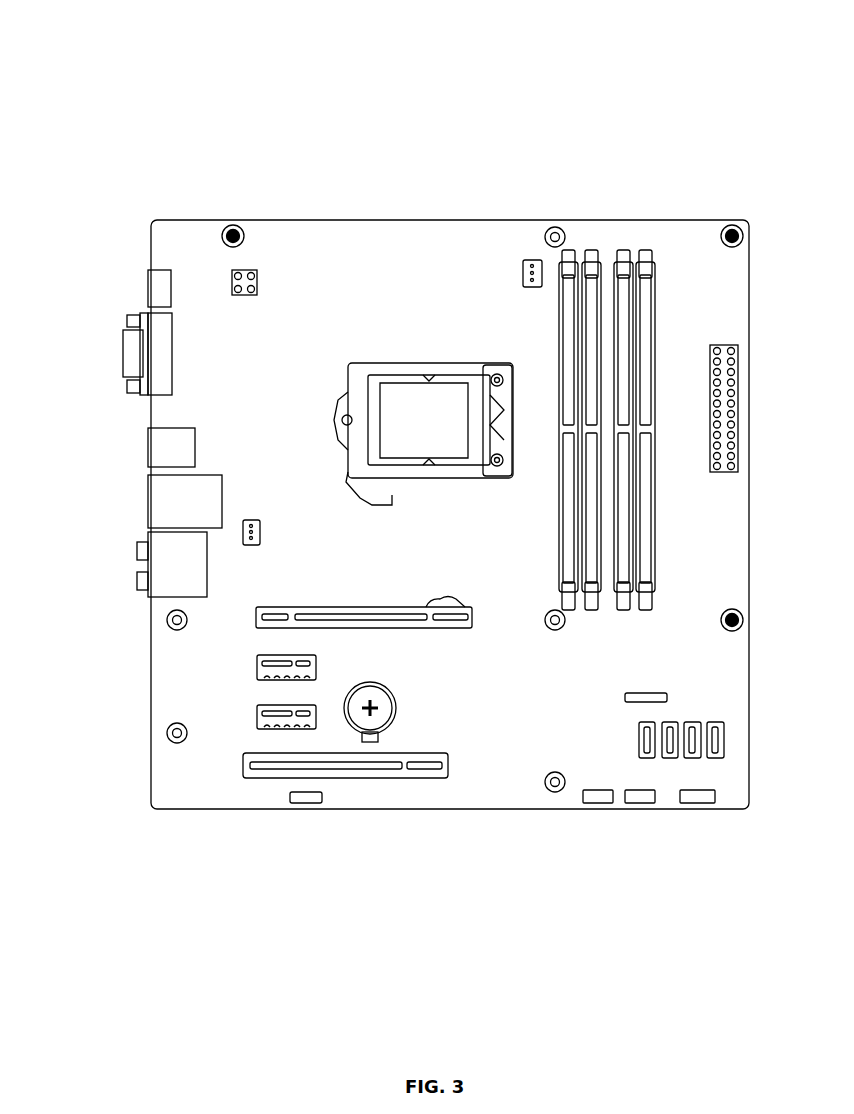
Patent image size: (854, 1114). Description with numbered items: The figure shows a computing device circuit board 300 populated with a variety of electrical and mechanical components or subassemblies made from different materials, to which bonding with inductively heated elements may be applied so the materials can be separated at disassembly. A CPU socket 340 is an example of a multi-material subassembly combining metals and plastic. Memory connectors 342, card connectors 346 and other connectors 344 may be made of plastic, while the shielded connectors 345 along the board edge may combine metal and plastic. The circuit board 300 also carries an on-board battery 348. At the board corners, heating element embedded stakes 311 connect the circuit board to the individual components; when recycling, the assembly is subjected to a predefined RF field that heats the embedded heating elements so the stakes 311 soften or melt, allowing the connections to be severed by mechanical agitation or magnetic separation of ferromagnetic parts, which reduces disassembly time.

The circuit board 300 is at (674, 61).
The heating element embedded stakes 311 is at (228, 231).
The CPU socket 340 is at (437, 363).
The memory connectors 342 is at (645, 252).
The other connectors 344 is at (248, 270).
The shielded connectors 345 is at (148, 283).
The card connectors 346 is at (256, 607).
The on-board battery 348 is at (345, 693).